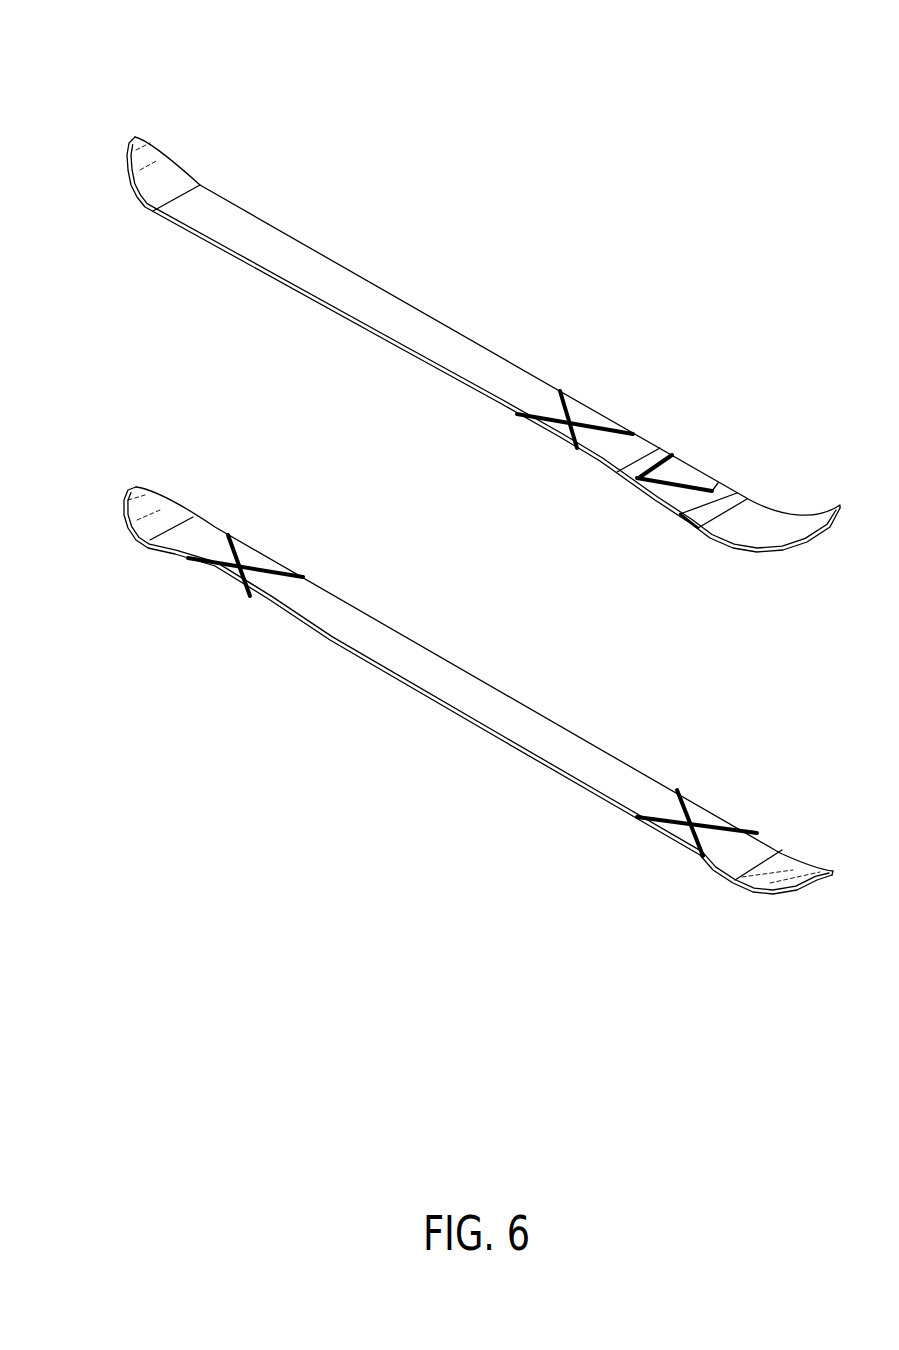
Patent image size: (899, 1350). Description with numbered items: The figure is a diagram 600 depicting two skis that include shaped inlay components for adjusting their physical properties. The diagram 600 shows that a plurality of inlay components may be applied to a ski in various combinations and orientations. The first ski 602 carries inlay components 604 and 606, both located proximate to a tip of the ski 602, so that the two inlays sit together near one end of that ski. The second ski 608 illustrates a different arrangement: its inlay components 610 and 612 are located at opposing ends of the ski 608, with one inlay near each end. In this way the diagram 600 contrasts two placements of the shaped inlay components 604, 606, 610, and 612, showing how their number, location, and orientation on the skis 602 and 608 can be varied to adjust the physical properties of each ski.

The diagram 600 is at (106, 79).
The ski 602 is at (217, 187).
The inlay component 604 is at (560, 390).
The inlay component 606 is at (657, 445).
The ski 608 is at (207, 522).
The inlay component 610 is at (247, 598).
The inlay component 612 is at (678, 788).